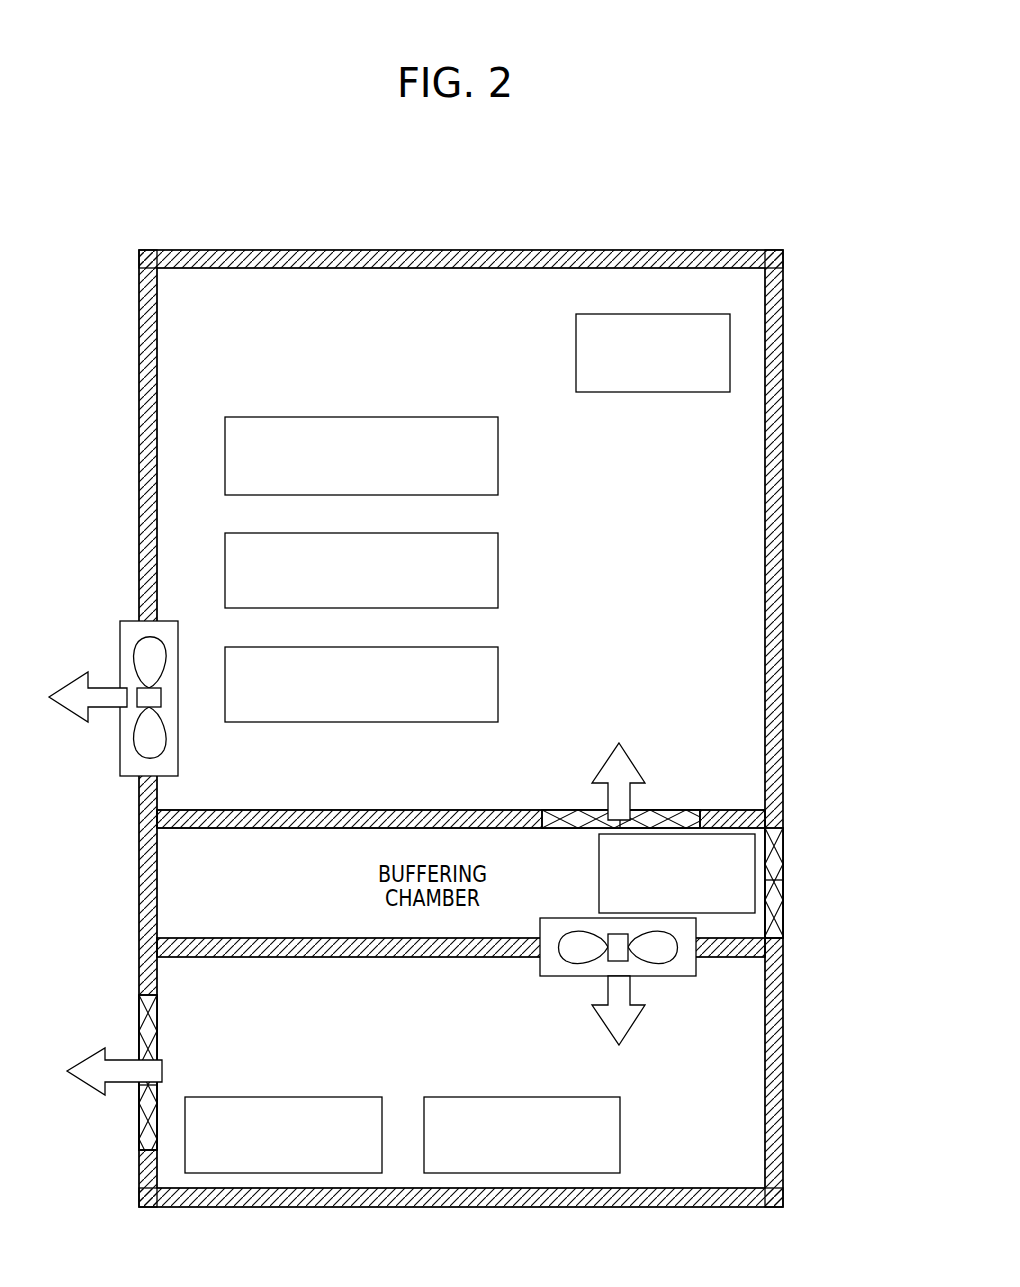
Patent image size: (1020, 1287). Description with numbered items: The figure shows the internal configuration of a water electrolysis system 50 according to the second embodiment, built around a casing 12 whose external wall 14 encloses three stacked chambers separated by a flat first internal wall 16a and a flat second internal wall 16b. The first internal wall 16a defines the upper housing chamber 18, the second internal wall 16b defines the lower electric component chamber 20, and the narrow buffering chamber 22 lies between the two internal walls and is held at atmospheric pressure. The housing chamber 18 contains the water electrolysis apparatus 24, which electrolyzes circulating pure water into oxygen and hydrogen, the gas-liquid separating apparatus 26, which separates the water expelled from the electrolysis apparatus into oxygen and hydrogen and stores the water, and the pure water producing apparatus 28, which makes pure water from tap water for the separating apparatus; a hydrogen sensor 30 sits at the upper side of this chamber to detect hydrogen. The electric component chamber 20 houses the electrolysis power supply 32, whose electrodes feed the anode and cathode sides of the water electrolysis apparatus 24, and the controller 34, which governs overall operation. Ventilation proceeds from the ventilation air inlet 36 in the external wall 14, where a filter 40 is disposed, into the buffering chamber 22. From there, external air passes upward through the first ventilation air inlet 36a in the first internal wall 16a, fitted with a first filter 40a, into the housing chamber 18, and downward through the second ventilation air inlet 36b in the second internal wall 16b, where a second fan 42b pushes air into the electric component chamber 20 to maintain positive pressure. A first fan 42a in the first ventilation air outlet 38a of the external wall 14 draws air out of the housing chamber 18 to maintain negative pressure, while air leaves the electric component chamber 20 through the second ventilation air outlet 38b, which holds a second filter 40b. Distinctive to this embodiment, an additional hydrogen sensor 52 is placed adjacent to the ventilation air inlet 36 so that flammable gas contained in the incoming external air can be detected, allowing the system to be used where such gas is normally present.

The casing 12 is at (816, 288).
The external wall 14 is at (784, 335).
The first internal wall 16a is at (283, 828).
The second internal wall 16b is at (283, 947).
The housing chamber 18 is at (680, 276).
The electric component chamber 20 is at (750, 1060).
The buffering chamber 22 is at (232, 838).
The water electrolysis apparatus 24 is at (498, 452).
The gas-liquid separating apparatus 26 is at (498, 568).
The pure water producing apparatus 28 is at (498, 682).
The hydrogen sensor 30 is at (652, 392).
The electrolysis power supply 32 is at (283, 1097).
The controller 34 is at (521, 1097).
The ventilation air inlet 36 is at (773, 935).
The first ventilation air inlet 36a is at (690, 822).
The second ventilation air inlet 36b is at (692, 948).
The first ventilation air outlet 38a is at (147, 775).
The second ventilation air outlet 38b is at (147, 1145).
The filter 40 is at (773, 850).
The first filter 40a is at (565, 815).
The second filter 40b is at (147, 1026).
The first fan 42a is at (120, 645).
The second fan 42b is at (570, 978).
The water electrolysis system 50 is at (475, 219).
The hydrogen sensor 52 is at (598, 872).